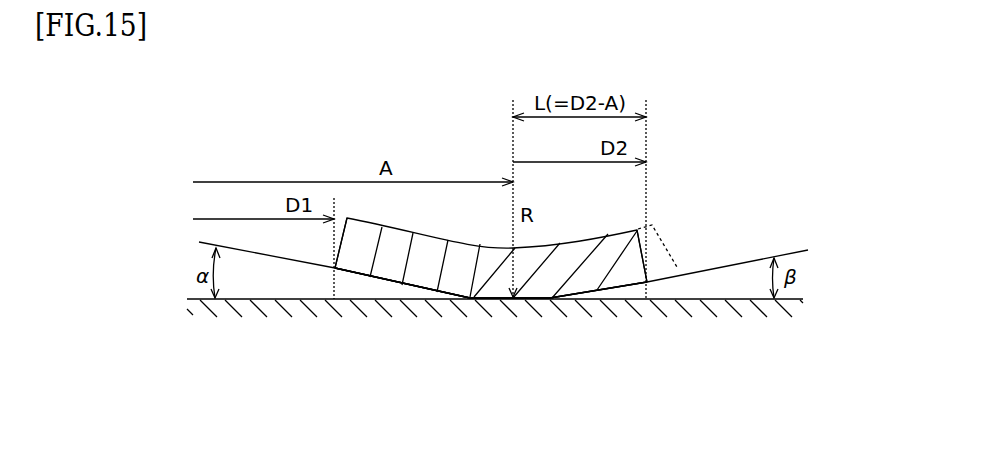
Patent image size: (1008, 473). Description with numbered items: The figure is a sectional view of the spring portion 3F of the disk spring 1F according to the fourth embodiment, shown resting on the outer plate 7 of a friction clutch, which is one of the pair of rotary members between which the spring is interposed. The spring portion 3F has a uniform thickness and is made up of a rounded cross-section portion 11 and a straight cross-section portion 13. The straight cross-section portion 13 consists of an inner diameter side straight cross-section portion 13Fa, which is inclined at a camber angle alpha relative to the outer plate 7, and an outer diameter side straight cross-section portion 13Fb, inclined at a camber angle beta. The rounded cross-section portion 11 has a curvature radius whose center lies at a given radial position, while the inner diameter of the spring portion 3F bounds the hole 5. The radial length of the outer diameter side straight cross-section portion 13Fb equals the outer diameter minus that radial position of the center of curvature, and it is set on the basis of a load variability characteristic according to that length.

The disk spring 1F is at (475, 155).
The hole 5 is at (334, 232).
The outer plate 7 is at (275, 298).
The spring portion 3F is at (450, 290).
The rounded cross-section portion 11 is at (508, 295).
The straight cross-section portion 13 is at (492, 356).
The inner diameter side straight cross-section portion 13Fa is at (377, 283).
The outer diameter side straight cross-section portion 13Fb is at (652, 225).